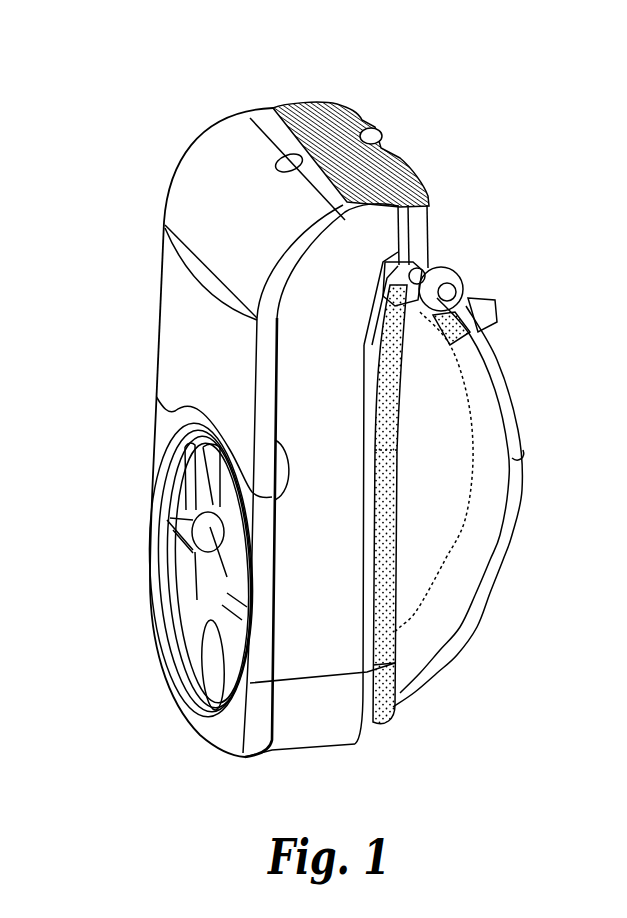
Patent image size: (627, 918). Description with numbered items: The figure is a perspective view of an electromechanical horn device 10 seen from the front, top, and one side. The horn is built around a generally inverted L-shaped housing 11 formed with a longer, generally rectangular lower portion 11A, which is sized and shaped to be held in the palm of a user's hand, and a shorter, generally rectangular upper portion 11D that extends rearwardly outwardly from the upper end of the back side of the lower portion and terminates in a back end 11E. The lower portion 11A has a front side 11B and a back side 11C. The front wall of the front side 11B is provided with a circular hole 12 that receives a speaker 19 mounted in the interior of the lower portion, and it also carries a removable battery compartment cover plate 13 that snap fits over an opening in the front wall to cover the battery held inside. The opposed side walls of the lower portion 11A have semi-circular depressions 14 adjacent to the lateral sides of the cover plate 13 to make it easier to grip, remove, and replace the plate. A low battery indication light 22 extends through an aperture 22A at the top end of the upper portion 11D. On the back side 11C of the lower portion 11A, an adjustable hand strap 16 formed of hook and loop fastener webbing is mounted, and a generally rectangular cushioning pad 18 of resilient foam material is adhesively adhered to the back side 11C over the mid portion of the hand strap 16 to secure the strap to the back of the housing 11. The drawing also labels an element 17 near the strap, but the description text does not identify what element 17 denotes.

The electromechanical horn device 10 is at (469, 145).
The housing 11 is at (337, 537).
The lower portion 11A is at (338, 608).
The front side 11B is at (167, 427).
The back side 11C is at (375, 488).
The upper portion 11D is at (400, 232).
The back end 11E is at (410, 199).
The circular hole 12 is at (172, 448).
The battery compartment cover plate 13 is at (222, 366).
The semi-circular depressions 14 is at (290, 450).
The hand strap 16 is at (513, 537).
The buckle 17 is at (467, 312).
The cushioning pad 18 is at (394, 425).
The speaker 19 is at (200, 587).
The low battery indication light 22 is at (289, 157).
The aperture 22A is at (294, 173).